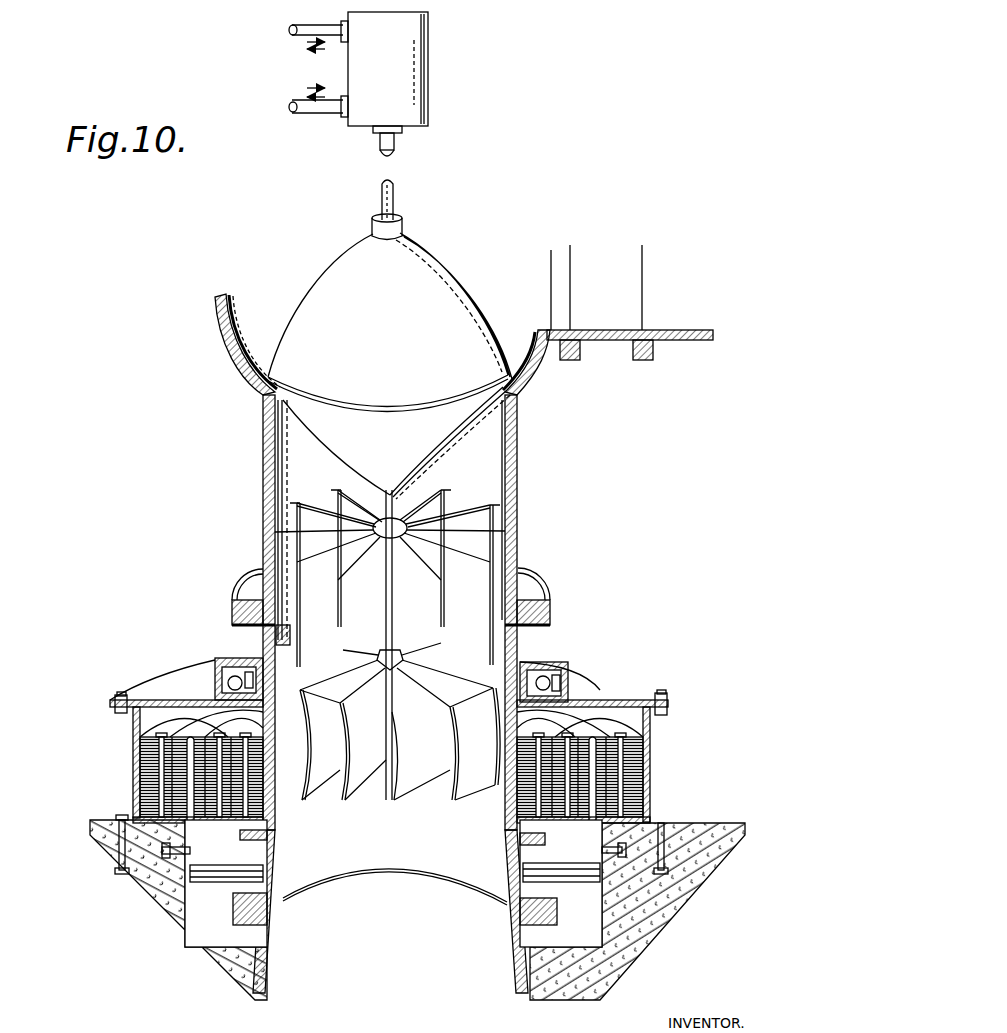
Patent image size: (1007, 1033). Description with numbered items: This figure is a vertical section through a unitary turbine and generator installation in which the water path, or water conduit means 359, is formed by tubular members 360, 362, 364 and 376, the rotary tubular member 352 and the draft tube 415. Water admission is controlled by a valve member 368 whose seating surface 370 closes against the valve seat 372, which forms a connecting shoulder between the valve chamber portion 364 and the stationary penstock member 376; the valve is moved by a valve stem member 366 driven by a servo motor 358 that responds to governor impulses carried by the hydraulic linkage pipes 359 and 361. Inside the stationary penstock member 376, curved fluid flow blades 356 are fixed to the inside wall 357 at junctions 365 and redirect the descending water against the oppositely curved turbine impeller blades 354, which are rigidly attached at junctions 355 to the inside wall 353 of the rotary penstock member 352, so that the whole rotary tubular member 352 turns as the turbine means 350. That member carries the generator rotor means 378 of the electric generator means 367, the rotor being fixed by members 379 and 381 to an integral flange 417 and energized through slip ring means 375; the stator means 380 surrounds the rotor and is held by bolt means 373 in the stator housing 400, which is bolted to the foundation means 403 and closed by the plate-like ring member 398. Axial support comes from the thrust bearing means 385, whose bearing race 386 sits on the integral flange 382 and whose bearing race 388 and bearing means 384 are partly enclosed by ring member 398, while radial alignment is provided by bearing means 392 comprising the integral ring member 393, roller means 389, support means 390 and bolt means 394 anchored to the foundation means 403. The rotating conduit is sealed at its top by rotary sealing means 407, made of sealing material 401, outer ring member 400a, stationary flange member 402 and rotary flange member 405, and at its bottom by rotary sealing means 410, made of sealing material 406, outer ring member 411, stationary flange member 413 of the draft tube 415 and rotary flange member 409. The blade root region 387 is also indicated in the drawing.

The turbine means 350 is at (555, 648).
The rotary tubular member 352 is at (592, 640).
The inside wall 353 is at (505, 842).
The turbine impeller blades 354 is at (440, 770).
The junctions 355 is at (503, 663).
The fluid flow blades 356 is at (512, 535).
The inside wall 357 is at (280, 445).
The servo motor 358 is at (415, 110).
The water conduit means 359 is at (300, 31).
The tubular member 360 is at (700, 341).
The pipe 361 is at (293, 108).
The tubular member 362 is at (618, 341).
The valve chamber lower portion 364 is at (222, 350).
The junctions 365 is at (340, 490).
The valve stem member 366 is at (394, 206).
The electric generator means 367 is at (173, 723).
The valve member 368 is at (455, 288).
The seating surface 370 is at (455, 402).
The valve seat 372 is at (262, 400).
The bolt means 373 is at (160, 775).
The slip ring means 375 is at (263, 858).
The stationary penstock member 376 is at (516, 450).
The generator rotor means 378 is at (182, 700).
The securing member 379 is at (600, 715).
The stator means 380 is at (160, 768).
The securing member 381 is at (283, 760).
The integral flange 382 is at (255, 665).
The bearing means 384 is at (570, 688).
The thrust bearing means 385 is at (210, 683).
The bearing race 386 is at (238, 665).
The blade root 387 is at (507, 808).
The bearing race 388 is at (572, 697).
The roller means 389 is at (570, 910).
The support means 390 is at (600, 893).
The bearing means 392 is at (585, 905).
The integral ring member 393 is at (252, 874).
The bolt means 394 is at (620, 870).
The plate-like ring member 398 is at (668, 705).
The stator housing 400 is at (645, 770).
The outer ring member 400a is at (548, 605).
The sealing material 401 is at (525, 600).
The stationary flange member 402 is at (522, 580).
The foundation means 403 is at (115, 819).
The rotary flange member 405 is at (240, 623).
The sealing material 406 is at (270, 913).
The rotary sealing means 407 is at (250, 600).
The rotary flange member 409 is at (238, 897).
The rotary sealing means 410 is at (570, 945).
The outer ring member 411 is at (262, 918).
The stationary flange member 413 is at (263, 935).
The draft tube 415 is at (262, 970).
The integral flange 417 is at (240, 834).